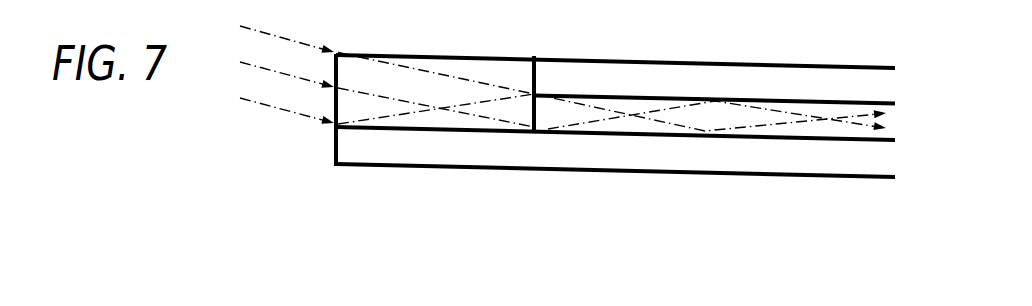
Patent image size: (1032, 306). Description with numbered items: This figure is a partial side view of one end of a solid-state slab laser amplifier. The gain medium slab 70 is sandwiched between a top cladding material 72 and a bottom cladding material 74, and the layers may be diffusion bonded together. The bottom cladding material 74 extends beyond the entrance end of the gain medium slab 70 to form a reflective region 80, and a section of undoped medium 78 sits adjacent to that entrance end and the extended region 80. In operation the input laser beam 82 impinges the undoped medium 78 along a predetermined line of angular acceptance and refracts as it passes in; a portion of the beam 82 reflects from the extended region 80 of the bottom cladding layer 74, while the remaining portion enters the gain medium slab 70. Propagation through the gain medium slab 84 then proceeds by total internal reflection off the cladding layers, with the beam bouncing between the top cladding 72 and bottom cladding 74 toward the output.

The gain medium slab 70 is at (616, 96).
The top cladding material 72 is at (832, 64).
The bottom cladding material 74 is at (770, 176).
The section of undoped medium 78 is at (421, 54).
The reflective region 80 is at (430, 130).
The input laser beam 82 is at (282, 120).
The propagation through the gain medium slab 84 is at (889, 123).